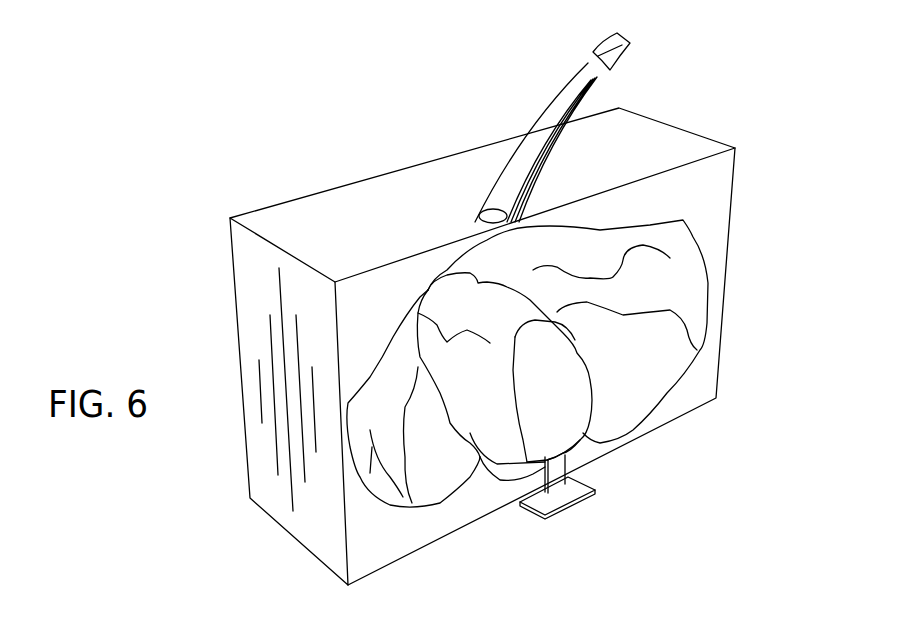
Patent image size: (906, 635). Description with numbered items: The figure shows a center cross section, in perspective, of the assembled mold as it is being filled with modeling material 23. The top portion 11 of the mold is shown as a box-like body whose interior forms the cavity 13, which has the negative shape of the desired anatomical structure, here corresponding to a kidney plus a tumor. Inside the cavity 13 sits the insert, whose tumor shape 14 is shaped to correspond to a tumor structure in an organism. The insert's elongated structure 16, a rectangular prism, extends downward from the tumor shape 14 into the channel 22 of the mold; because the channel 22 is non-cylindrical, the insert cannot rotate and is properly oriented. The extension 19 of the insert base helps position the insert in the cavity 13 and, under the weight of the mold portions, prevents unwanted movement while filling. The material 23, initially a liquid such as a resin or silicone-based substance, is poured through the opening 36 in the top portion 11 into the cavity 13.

The top portion 11 is at (707, 190).
The cavity 13 is at (658, 298).
The tumor shape 14 is at (570, 382).
The elongated structure 16 is at (552, 470).
The extension 19 is at (562, 509).
The channel 22 is at (566, 503).
The material 23 is at (569, 88).
The opening 36 is at (493, 214).